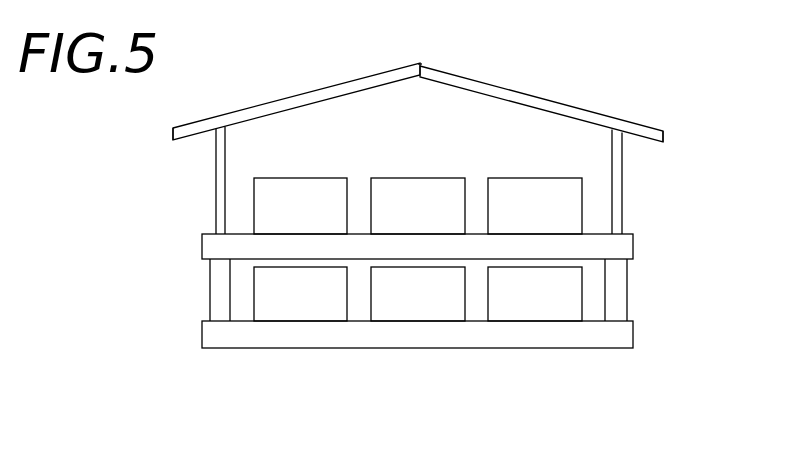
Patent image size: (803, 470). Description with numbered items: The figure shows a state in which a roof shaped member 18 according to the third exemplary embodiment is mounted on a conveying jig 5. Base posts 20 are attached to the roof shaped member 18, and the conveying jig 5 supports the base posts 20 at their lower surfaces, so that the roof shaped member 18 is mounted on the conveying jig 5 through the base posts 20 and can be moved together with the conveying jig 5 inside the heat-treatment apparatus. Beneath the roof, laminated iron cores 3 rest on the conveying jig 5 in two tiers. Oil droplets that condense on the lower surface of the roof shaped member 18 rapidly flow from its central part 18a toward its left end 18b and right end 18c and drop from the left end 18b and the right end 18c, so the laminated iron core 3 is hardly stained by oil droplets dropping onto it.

The laminated iron core 3 is at (293, 193).
The conveying jig 5 is at (360, 240).
The roof shaped member 18 is at (353, 85).
The central part 18a is at (420, 75).
The left end 18b is at (173, 142).
The right end 18c is at (663, 141).
The base posts 20 is at (218, 213).